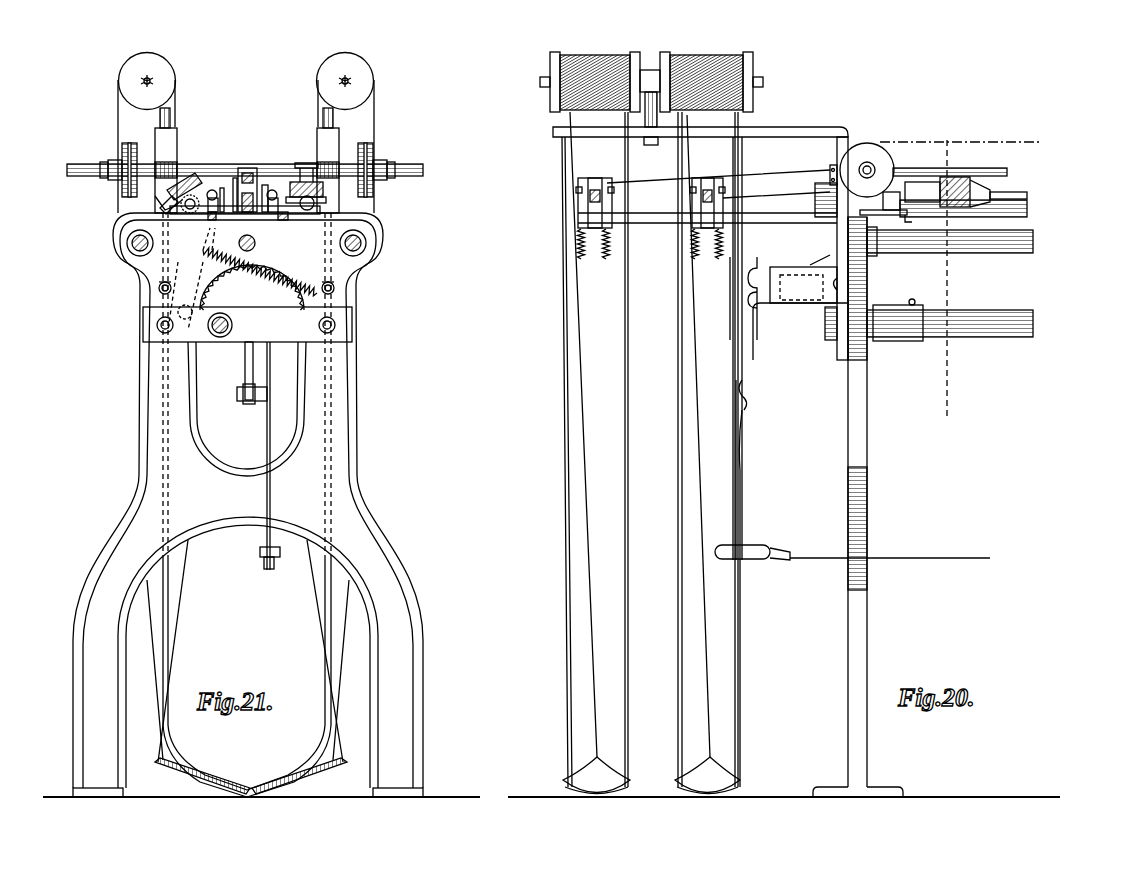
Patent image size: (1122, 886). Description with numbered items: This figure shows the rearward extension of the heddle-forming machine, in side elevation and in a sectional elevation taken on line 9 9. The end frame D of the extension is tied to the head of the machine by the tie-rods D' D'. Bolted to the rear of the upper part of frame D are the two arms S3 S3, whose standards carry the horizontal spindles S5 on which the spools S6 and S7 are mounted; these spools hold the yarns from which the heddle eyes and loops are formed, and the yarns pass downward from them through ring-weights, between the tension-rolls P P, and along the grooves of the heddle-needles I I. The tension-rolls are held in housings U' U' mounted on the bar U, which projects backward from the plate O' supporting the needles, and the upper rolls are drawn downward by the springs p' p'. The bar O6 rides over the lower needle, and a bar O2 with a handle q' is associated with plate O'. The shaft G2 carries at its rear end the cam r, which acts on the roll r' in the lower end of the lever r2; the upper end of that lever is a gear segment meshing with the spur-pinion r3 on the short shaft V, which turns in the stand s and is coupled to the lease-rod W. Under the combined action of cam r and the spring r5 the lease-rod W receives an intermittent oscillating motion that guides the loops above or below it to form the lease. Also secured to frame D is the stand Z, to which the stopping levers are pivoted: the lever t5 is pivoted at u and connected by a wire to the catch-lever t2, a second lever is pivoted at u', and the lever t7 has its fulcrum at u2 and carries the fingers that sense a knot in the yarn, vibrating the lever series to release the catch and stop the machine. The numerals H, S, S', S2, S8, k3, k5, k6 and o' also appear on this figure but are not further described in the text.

In FIG. 21, the end frame D is at (248, 505).
In FIG. 20, the end frame D is at (732, 467).
In FIG. 21, the tie-rods D' is at (246, 243).
In FIG. 20, the tie-rods D' is at (950, 248).
In FIG. 21, the shaft H is at (255, 243).
In FIG. 21, the shaft G2 is at (232, 325).
In FIG. 21, the cam r is at (185, 297).
In FIG. 20, the cam r is at (919, 307).
In FIG. 20, the roll or truck r' is at (822, 322).
In FIG. 21, the lever r2 is at (162, 198).
In FIG. 20, the lever r2 is at (859, 240).
In FIG. 21, the spur-pinion r3 is at (196, 201).
In FIG. 20, the spur-pinion r3 is at (819, 200).
In FIG. 21, the spring r5 is at (252, 287).
In FIG. 21, the stand s is at (260, 262).
In FIG. 21, the stand Z is at (249, 373).
In FIG. 20, the stand Z is at (793, 313).
In FIG. 21, the catch-lever t2 is at (278, 560).
In FIG. 20, the catch-lever t2 is at (852, 550).
In FIG. 21, the lever t5 is at (276, 456).
In FIG. 20, the lever t5 is at (742, 487).
In FIG. 20, the lever t7 is at (742, 242).
In FIG. 20, the block S is at (891, 201).
In FIG. 21, the plate S' is at (246, 192).
In FIG. 21, the post S2 is at (171, 113).
In FIG. 20, the post S2 is at (657, 99).
In FIG. 21, the arms S3 is at (247, 170).
In FIG. 20, the arms S3 is at (700, 127).
In FIG. 21, the horizontal spindles S5 is at (246, 424).
In FIG. 20, the horizontal spindles S5 is at (652, 436).
In FIG. 21, the spools S6 is at (237, 80).
In FIG. 20, the spools S6 is at (711, 104).
In FIG. 20, the spools S7 is at (590, 107).
In FIG. 21, the belt S8 is at (168, 607).
In FIG. 20, the belt S8 is at (750, 522).
In FIG. 21, the pulley k3 is at (248, 167).
In FIG. 20, the pulley k3 is at (867, 170).
In FIG. 21, the shaft k5 is at (245, 160).
In FIG. 21, the collar k6 is at (117, 178).
In FIG. 21, the heddle-needles I is at (247, 168).
In FIG. 20, the heddle-needles I is at (960, 175).
In FIG. 21, the plate O' is at (265, 184).
In FIG. 21, the bar O2 is at (245, 219).
In FIG. 20, the bar O2 is at (968, 208).
In FIG. 21, the bar O6 is at (257, 178).
In FIG. 20, the bar O6 is at (1007, 176).
In FIG. 21, the lease-rod W is at (245, 186).
In FIG. 20, the lease-rod W is at (947, 192).
In FIG. 21, the handle q' is at (216, 196).
In FIG. 20, the bar U is at (707, 218).
In FIG. 21, the housings U' is at (247, 198).
In FIG. 20, the housings U' is at (650, 206).
In FIG. 20, the tension-rolls P is at (650, 200).
In FIG. 20, the springs p' is at (650, 247).
In FIG. 20, the short shaft V is at (883, 217).
In FIG. 20, the pivot plate o' is at (722, 174).
In FIG. 20, the pivot u is at (752, 583).
In FIG. 20, the pivot u' is at (750, 300).
In FIG. 20, the fulcrum u2 is at (745, 298).
In FIG. 20, the section line 9 is at (960, 282).